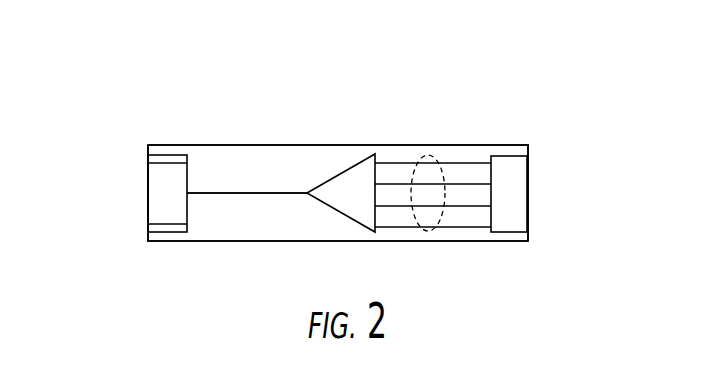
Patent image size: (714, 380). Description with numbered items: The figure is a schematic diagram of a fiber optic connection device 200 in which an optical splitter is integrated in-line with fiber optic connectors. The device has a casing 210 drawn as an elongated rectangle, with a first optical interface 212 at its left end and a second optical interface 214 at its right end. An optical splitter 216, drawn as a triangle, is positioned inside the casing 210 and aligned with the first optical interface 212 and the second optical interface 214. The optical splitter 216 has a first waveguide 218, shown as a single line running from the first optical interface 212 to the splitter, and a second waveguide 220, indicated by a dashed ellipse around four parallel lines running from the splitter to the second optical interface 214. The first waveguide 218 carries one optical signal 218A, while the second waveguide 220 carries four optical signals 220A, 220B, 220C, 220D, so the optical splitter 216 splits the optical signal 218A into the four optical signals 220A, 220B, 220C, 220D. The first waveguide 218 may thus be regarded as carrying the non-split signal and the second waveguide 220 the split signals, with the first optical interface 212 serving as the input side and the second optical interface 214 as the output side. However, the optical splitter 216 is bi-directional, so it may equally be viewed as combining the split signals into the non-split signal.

The fiber optic connection device 200 is at (261, 84).
The casing 210 is at (237, 145).
The first optical interface 212 is at (148, 153).
The second optical interface 214 is at (530, 156).
The optical splitter 216 is at (367, 157).
The first waveguide 218 is at (268, 193).
The optical signal 218A is at (212, 194).
The second waveguide 220 is at (427, 155).
The optical signal 220A is at (481, 163).
The optical signal 220B is at (470, 184).
The optical signal 220C is at (458, 206).
The optical signal 220D is at (448, 227).